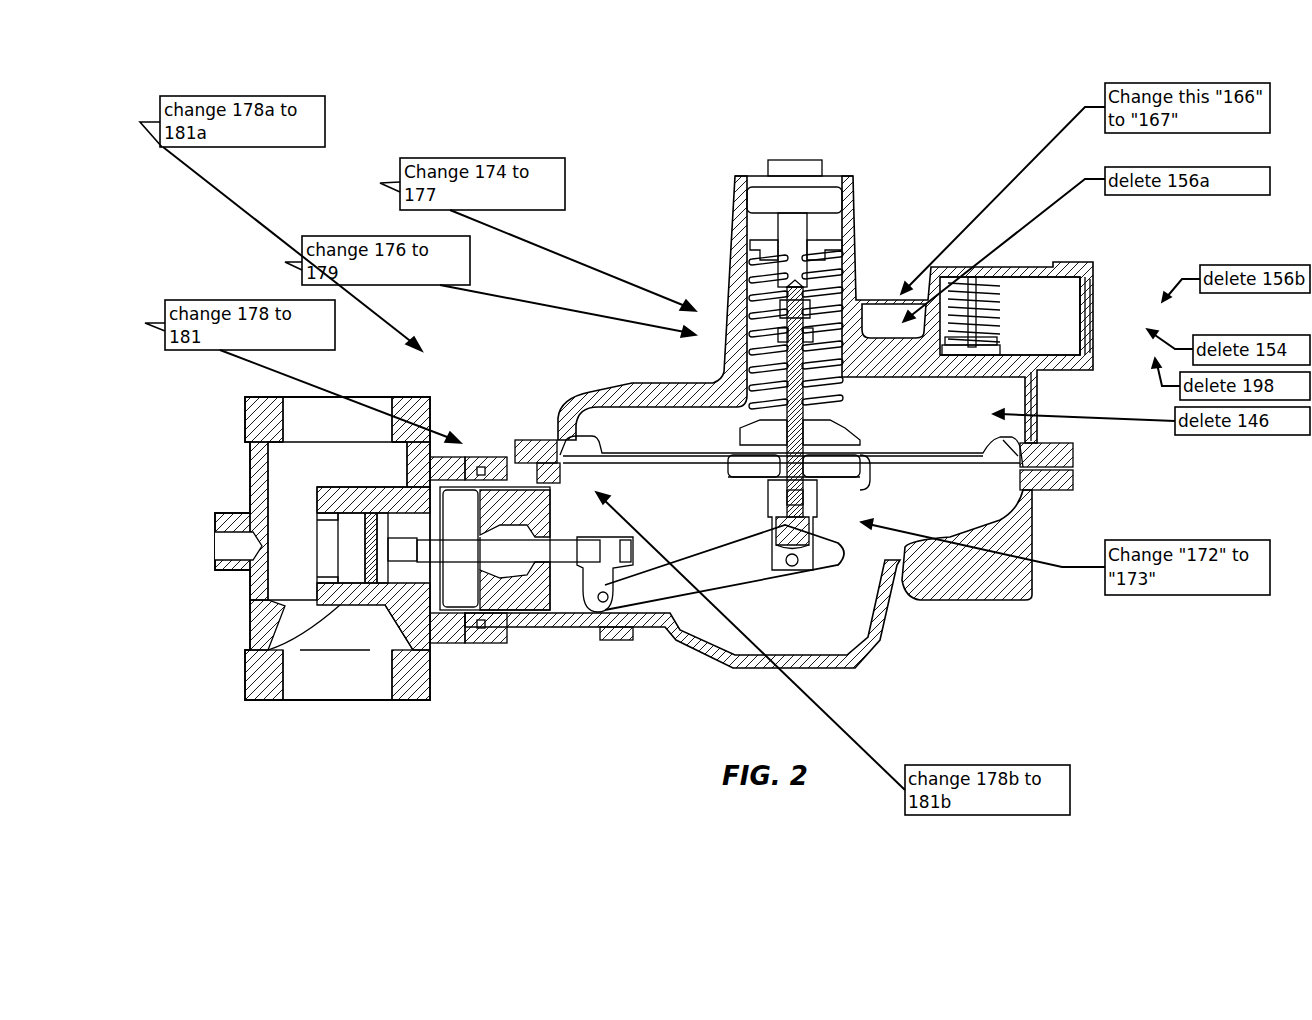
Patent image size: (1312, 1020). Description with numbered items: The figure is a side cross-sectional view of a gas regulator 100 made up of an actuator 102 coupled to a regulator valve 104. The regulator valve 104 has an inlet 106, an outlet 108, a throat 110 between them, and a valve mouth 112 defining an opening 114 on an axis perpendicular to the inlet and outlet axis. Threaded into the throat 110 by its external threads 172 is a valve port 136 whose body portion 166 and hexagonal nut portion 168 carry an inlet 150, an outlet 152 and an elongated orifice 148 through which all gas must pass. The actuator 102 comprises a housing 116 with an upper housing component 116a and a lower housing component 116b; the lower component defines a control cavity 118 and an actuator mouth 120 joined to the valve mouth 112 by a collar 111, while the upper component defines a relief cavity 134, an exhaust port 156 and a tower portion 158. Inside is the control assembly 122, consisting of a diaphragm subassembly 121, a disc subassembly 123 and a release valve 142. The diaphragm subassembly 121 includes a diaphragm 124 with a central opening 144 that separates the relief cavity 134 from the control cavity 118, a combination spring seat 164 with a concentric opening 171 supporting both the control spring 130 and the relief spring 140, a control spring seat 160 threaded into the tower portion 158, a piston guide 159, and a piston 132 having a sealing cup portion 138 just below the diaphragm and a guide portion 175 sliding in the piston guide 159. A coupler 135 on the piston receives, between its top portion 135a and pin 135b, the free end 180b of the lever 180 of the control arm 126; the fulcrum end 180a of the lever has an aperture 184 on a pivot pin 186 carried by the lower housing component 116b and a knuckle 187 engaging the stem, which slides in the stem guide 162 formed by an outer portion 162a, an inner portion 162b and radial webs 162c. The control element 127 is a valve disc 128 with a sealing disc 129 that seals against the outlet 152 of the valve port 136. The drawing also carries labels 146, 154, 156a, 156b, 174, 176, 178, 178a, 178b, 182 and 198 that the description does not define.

The gas regulator 100 is at (882, 150).
The actuator 102 is at (860, 212).
The regulator valve 104 is at (428, 395).
The inlet 106 is at (296, 425).
The outlet 108 is at (290, 690).
The throat 110 is at (300, 597).
The collar 111 is at (484, 455).
The valve mouth 112 is at (440, 640).
The opening 114 is at (440, 605).
The housing 116 is at (1034, 572).
The upper housing component 116a is at (736, 206).
The lower housing component 116b is at (868, 660).
The control cavity 118 is at (905, 603).
The actuator mouth 120 is at (572, 660).
The diaphragm subassembly 121 is at (653, 470).
The control assembly 122 is at (858, 494).
The disc subassembly 123 is at (470, 625).
The diaphragm 124 is at (1052, 445).
The control arm 126 is at (608, 520).
The control element 127 is at (392, 612).
The valve disc 128 is at (400, 540).
The sealing disc 129 is at (380, 600).
The control spring 130 is at (786, 292).
The piston 132 is at (790, 405).
The relief cavity 134 is at (1033, 393).
The coupler 135 is at (820, 538).
The top portion 135a is at (776, 528).
The pin 135b is at (791, 567).
The valve port 136 is at (214, 543).
The sealing cup portion 138 is at (872, 482).
The relief spring 140 is at (830, 384).
The release valve 142 is at (1000, 288).
The opening 144 is at (830, 405).
The relief spring 146 is at (975, 349).
The elongated orifice 148 is at (312, 578).
The inlet 150 is at (312, 520).
The outlet 152 is at (390, 530).
The relief valve member 154 is at (1010, 326).
The exhaust port 156 is at (1093, 296).
The cap portion 156a is at (945, 318).
The cap portion 156b is at (1000, 296).
The tower portion 158 is at (752, 242).
The piston guide 159 is at (790, 226).
The control spring seat 160 is at (828, 246).
The stem guide 162 is at (520, 612).
The outer portion 162a is at (524, 512).
The inner portion 162b is at (518, 622).
The radial webs 162c is at (547, 468).
The combination spring seat 164 is at (745, 426).
The body portion 166 is at (896, 292).
The hexagonal nut portion 168 is at (345, 585).
The opening 171 is at (722, 382).
The external threads 172 is at (854, 522).
The rod portion 174 is at (787, 340).
The guide portion 175 is at (805, 300).
The rod portion 176 is at (787, 375).
The stem portion 178 is at (452, 430).
The stem end 178a is at (418, 385).
The stem end 178b is at (584, 496).
The lever 180 is at (730, 588).
The fulcrum end 180a is at (650, 622).
The free end 180b is at (836, 565).
The body cavity 182 is at (352, 500).
The aperture 184 is at (578, 615).
The pivot pin 186 is at (598, 595).
The knuckle 187 is at (628, 548).
The relief seat 198 is at (1010, 340).